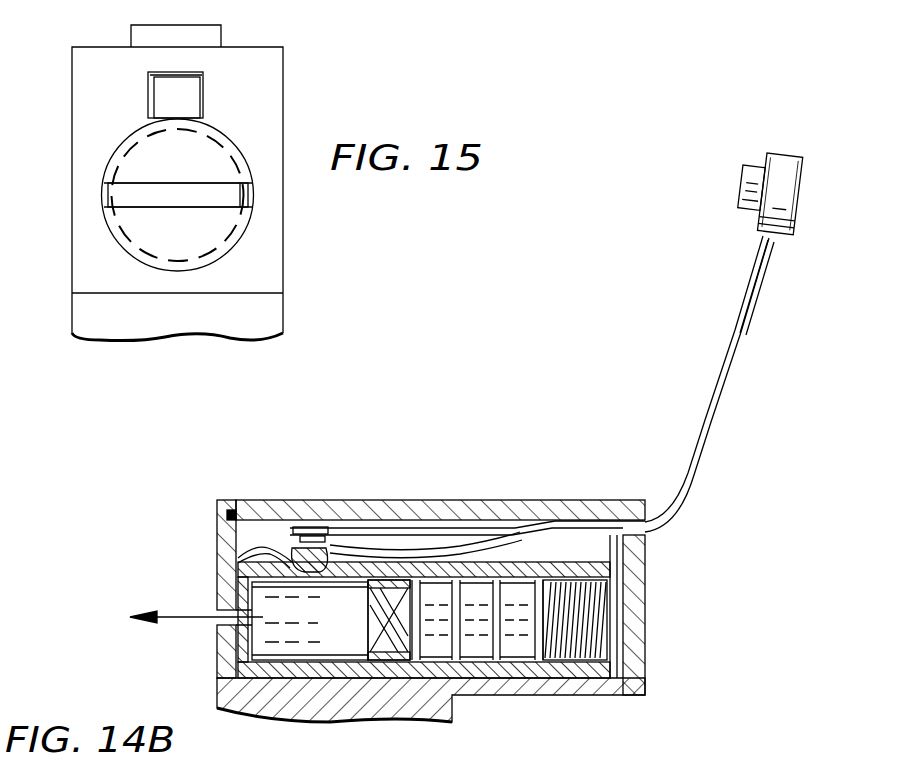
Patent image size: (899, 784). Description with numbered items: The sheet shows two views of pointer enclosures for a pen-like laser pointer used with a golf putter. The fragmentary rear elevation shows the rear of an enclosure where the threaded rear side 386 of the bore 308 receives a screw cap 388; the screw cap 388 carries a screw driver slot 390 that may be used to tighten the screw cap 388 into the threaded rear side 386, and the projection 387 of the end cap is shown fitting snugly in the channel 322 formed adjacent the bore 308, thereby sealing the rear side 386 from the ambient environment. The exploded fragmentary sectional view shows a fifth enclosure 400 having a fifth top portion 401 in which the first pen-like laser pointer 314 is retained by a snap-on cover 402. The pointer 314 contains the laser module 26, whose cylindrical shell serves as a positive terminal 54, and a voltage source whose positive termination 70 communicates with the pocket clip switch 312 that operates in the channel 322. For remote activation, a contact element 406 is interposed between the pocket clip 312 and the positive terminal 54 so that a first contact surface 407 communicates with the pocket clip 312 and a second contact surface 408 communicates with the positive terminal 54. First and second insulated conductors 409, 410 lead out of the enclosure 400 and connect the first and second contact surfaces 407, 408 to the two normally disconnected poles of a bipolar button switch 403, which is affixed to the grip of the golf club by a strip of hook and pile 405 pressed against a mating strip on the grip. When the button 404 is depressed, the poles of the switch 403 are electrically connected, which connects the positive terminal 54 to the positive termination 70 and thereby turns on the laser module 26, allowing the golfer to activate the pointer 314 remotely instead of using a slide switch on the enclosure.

In FIG. 14B, the laser module 26 is at (310, 621).
In FIG. 14B, the positive terminal 54 is at (353, 637).
In FIG. 14B, the positive termination 70 is at (580, 632).
In FIG. 15, the bore 308 is at (253, 173).
In FIG. 14B, the pocket clip switch 312 is at (445, 538).
In FIG. 14B, the first pen-like laser pointer 314 is at (293, 670).
In FIG. 15, the channel 322 is at (203, 88).
In FIG. 15, the threaded rear side 386 is at (117, 240).
In FIG. 15, the projection 387 is at (162, 108).
In FIG. 15, the screw cap 388 is at (128, 171).
In FIG. 15, the screw driver slot 390 is at (232, 208).
In FIG. 14B, the fifth enclosure 400 is at (221, 500).
In FIG. 14B, the fifth top portion 401 is at (215, 538).
In FIG. 14B, the snap-on cover 402 is at (295, 500).
In FIG. 14B, the bipolar button switch 403 is at (768, 153).
In FIG. 14B, the button 404 is at (744, 182).
In FIG. 14B, the strip of hook and pile 405 is at (808, 182).
In FIG. 14B, the contact element 406 is at (240, 556).
In FIG. 14B, the first contact surface 407 is at (333, 540).
In FIG. 14B, the second contact surface 408 is at (238, 632).
In FIG. 14B, the first insulated conductor 409 is at (745, 302).
In FIG. 14B, the second insulated conductor 410 is at (732, 343).